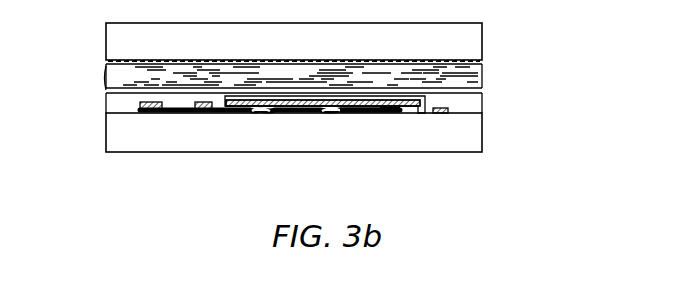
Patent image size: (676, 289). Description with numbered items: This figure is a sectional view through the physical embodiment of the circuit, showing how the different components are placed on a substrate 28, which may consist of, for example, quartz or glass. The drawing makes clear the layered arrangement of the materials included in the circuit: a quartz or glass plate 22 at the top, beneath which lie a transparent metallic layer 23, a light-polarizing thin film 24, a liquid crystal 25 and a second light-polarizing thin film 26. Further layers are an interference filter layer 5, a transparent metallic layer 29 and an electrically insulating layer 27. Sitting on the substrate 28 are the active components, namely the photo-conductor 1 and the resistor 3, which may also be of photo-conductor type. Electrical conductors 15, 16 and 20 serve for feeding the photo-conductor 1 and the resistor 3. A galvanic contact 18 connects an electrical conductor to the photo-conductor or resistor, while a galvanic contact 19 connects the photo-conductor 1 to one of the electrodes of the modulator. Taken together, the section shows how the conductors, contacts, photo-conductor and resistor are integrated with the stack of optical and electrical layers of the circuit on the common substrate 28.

The photo-conductor 1 is at (167, 118).
The resistor 3 is at (388, 118).
The interference filter layer 5 is at (325, 118).
The electrical conductor 15 is at (140, 101).
The electrical conductor 16 is at (203, 118).
The galvanic contact 18 is at (140, 111).
The galvanic contact 19 is at (364, 118).
The electrical conductor 20 is at (442, 118).
The quartz or glass plate 22 is at (482, 35).
The transparent metallic layer 23 is at (482, 60).
The light-polarizing thin film 24 is at (483, 63).
The liquid crystal 25 is at (482, 78).
The light-polarizing thin film 26 is at (472, 107).
The electrically insulating layer 27 is at (483, 116).
The substrate 28 is at (118, 142).
The transparent metallic layer 29 is at (268, 118).